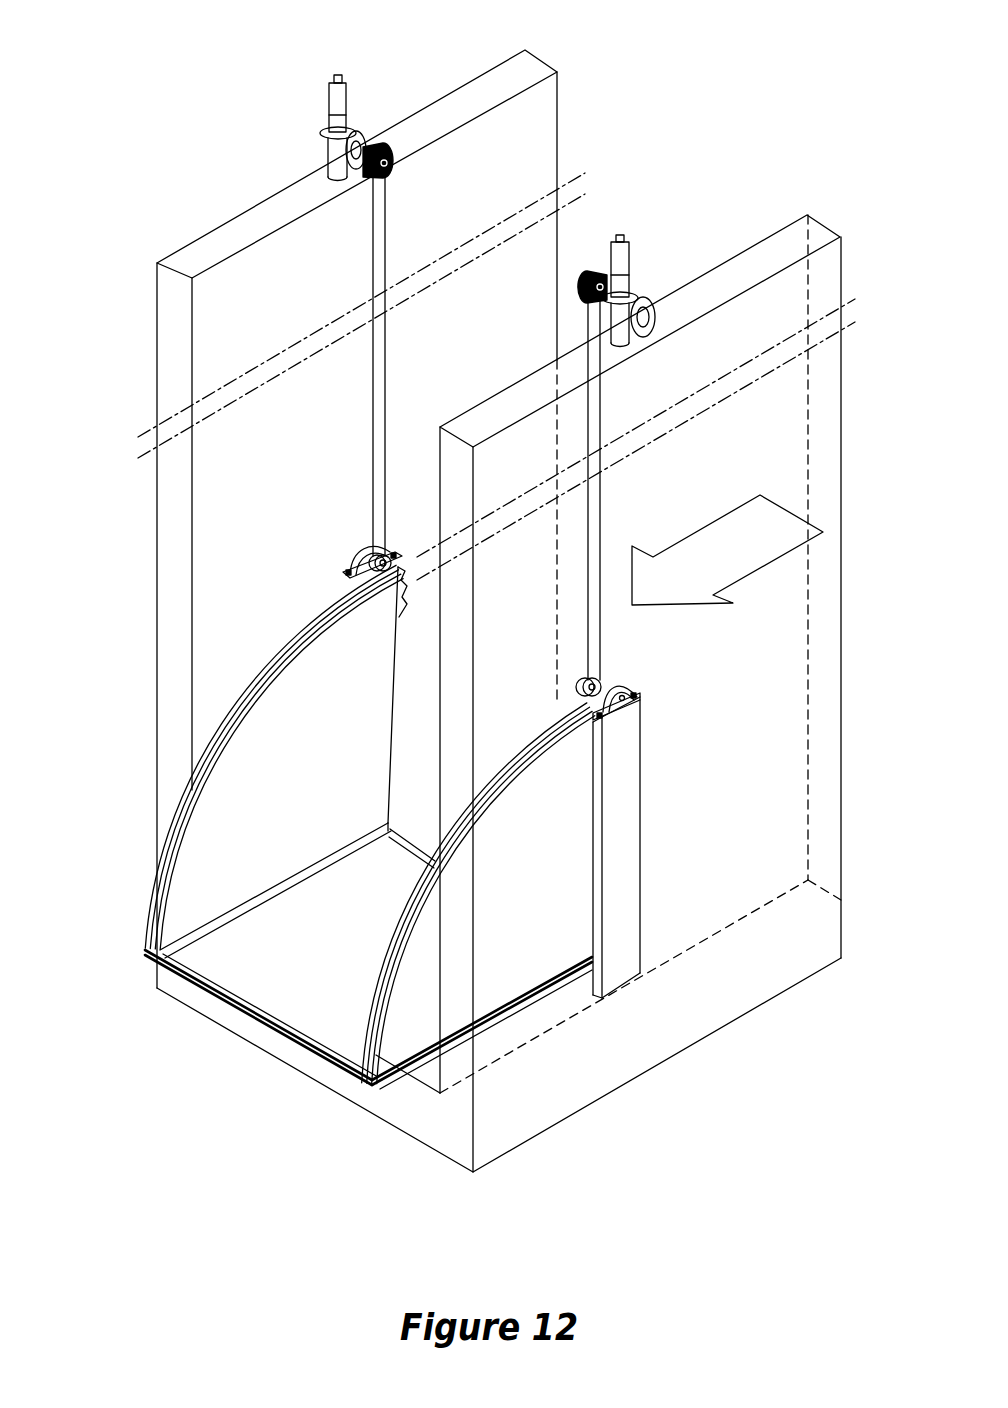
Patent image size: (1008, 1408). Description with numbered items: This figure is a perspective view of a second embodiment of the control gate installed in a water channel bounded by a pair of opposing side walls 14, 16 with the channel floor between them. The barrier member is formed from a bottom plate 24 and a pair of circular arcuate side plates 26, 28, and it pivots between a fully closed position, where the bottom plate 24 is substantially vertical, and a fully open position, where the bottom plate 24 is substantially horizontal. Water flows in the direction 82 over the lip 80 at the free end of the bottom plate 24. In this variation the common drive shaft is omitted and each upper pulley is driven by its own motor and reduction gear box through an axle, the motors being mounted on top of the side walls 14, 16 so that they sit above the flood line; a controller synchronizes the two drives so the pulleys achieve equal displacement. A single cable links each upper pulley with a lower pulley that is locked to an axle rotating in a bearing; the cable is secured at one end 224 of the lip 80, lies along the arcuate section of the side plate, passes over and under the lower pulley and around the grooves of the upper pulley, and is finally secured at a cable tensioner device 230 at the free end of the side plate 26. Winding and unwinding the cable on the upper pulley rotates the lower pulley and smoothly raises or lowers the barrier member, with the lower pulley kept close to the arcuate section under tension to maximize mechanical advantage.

The side wall 14 is at (540, 62).
The side wall 16 is at (818, 228).
The bottom plate 24 is at (365, 958).
The circular arcuate side plate 26 is at (307, 789).
The circular arcuate side plate 28 is at (535, 911).
The lip 80 is at (262, 1020).
The flow direction 82 is at (682, 591).
The cable end 224 is at (150, 942).
The cable tensioner device 230 is at (405, 600).